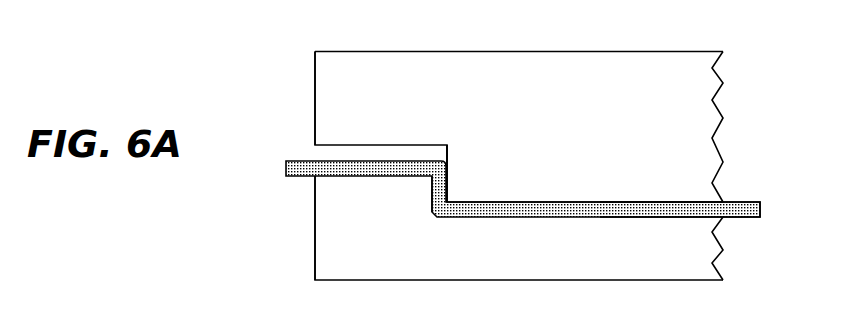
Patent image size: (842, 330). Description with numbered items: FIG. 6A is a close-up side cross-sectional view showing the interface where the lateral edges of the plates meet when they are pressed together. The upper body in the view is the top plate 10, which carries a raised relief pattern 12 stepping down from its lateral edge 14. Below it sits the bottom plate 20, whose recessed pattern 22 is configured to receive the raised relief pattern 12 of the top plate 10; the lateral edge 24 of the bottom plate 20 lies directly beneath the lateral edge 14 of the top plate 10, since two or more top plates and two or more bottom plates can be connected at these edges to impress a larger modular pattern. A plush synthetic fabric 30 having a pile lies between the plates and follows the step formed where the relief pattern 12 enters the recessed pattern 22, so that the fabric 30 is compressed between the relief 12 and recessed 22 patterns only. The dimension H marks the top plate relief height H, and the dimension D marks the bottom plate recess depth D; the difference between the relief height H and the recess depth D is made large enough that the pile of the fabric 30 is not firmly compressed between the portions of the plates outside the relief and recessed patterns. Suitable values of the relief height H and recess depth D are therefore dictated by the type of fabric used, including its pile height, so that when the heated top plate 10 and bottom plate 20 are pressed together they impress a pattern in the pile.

The top plate 10 is at (710, 84).
The raised relief pattern 12 is at (498, 202).
The lateral edge 14 is at (315, 79).
The bottom plate 20 is at (710, 254).
The recessed pattern 22 is at (518, 217).
The lateral edge 24 is at (315, 205).
The plush synthetic fabric 30 is at (737, 202).
The top plate relief height H is at (447, 172).
The bottom plate recess depth D is at (432, 197).